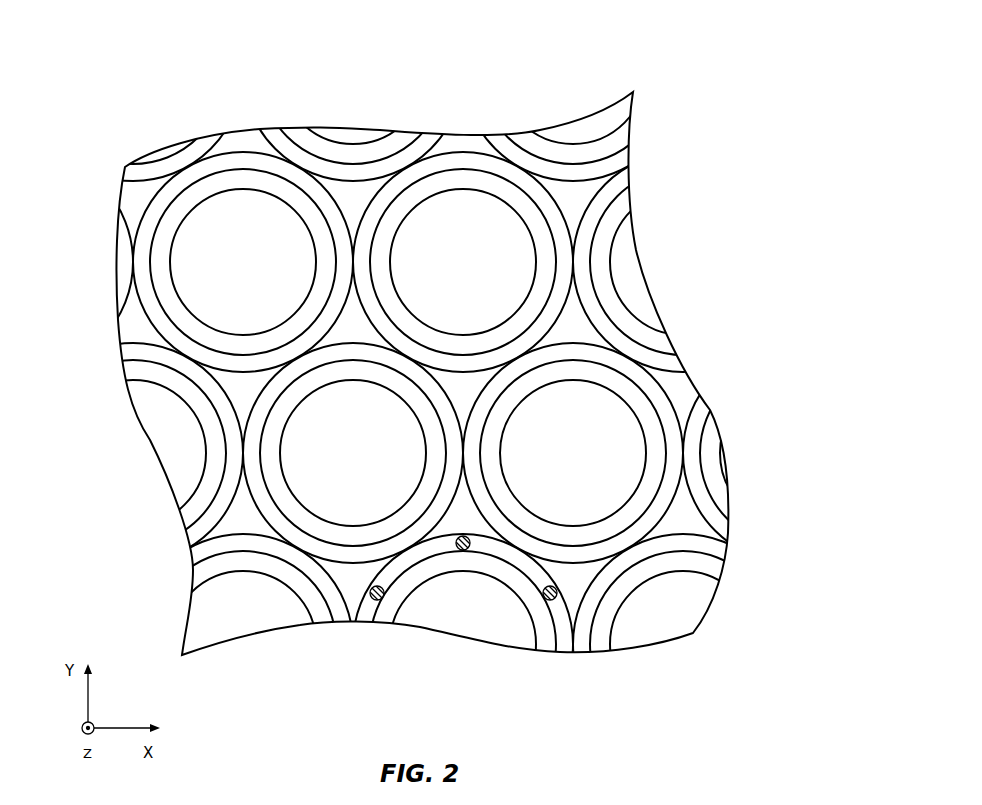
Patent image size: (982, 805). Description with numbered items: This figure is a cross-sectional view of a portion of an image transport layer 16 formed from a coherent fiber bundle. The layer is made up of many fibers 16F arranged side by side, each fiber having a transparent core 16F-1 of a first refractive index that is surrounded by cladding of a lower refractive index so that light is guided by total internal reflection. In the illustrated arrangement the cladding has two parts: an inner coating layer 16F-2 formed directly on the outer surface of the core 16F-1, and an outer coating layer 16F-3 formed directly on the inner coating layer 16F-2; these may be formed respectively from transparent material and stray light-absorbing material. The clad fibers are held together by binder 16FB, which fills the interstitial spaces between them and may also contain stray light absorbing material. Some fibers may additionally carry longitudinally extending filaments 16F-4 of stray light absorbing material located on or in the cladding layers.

The image transport layer 16 is at (456, 66).
The fibers 16F is at (126, 325).
The core 16F-1 is at (265, 210).
The inner coating layer 16F-2 is at (238, 180).
The outer coating layer 16F-3 is at (181, 183).
The binder 16FB is at (243, 390).
The longitudinally extending filaments 16F-4 is at (541, 593).